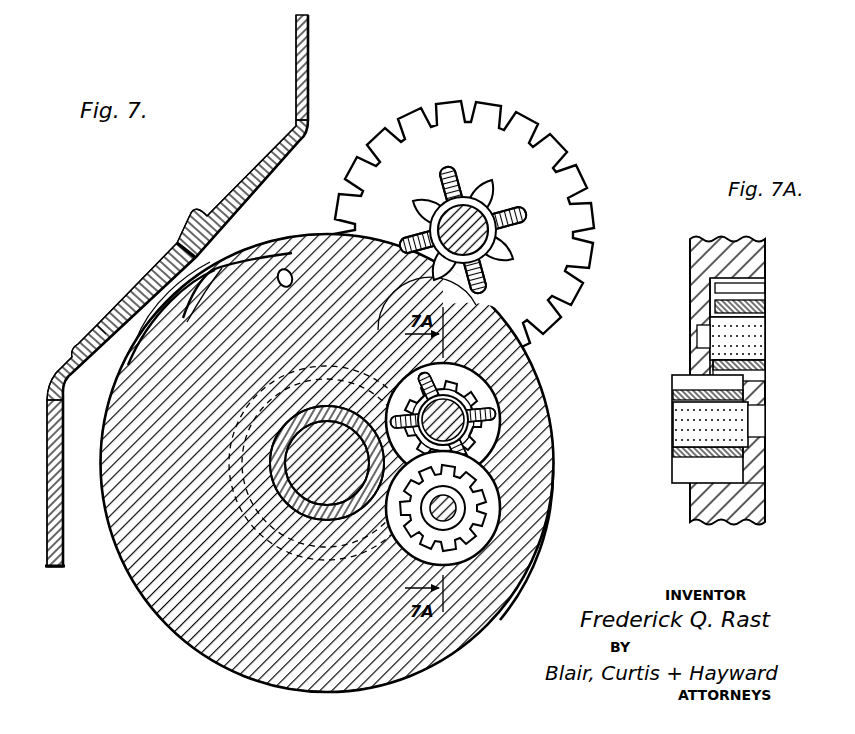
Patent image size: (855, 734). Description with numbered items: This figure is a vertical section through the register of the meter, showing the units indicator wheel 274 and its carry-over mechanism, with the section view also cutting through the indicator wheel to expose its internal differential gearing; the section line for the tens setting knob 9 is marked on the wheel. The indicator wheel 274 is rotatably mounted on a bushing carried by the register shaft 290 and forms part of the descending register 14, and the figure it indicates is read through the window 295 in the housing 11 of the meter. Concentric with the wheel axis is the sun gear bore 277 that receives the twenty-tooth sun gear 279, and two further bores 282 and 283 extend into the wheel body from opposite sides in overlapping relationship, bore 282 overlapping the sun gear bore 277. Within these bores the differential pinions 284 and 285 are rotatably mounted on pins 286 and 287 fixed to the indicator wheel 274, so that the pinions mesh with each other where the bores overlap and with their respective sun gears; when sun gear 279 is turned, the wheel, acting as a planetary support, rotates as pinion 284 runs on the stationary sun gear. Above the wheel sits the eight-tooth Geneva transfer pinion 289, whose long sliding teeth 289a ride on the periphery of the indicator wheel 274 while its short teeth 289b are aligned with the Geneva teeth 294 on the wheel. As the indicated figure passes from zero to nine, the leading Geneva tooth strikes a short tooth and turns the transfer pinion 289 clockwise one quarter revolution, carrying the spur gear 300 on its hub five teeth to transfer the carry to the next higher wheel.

In FIG. 7, the tens setting knob 9 is at (163, 633).
In FIG. 7, the housing 11 is at (221, 177).
In FIG. 7, the descending register 14 is at (506, 616).
In FIG. 7, the units indicator wheel 274 is at (426, 630).
In FIG. 7A, the units indicator wheel 274 is at (700, 253).
In FIG. 7, the sun gear bore 277 is at (268, 463).
In FIG. 7, the sun gear 279 is at (262, 513).
In FIG. 7, the bore 282 is at (490, 412).
In FIG. 7A, the bore 282 is at (766, 249).
In FIG. 7, the bore 283 is at (457, 511).
In FIG. 7A, the bore 283 is at (727, 510).
In FIG. 7, the differential pinion 284 is at (473, 393).
In FIG. 7A, the differential pinion 284 is at (753, 295).
In FIG. 7, the differential pinion 285 is at (460, 535).
In FIG. 7A, the differential pinion 285 is at (692, 465).
In FIG. 7, the pin 286 is at (487, 437).
In FIG. 7A, the pin 286 is at (753, 342).
In FIG. 7, the pin 287 is at (470, 518).
In FIG. 7A, the pin 287 is at (683, 427).
In FIG. 7, the Geneva transfer pinion 289 is at (468, 172).
In FIG. 7, the long teeth 289a is at (457, 283).
In FIG. 7, the short teeth 289b is at (488, 190).
In FIG. 7, the register shaft 290 is at (287, 503).
In FIG. 7, the Geneva teeth 294 is at (330, 318).
In FIG. 7, the window 295 is at (172, 247).
In FIG. 7, the spur gear 300 is at (503, 163).